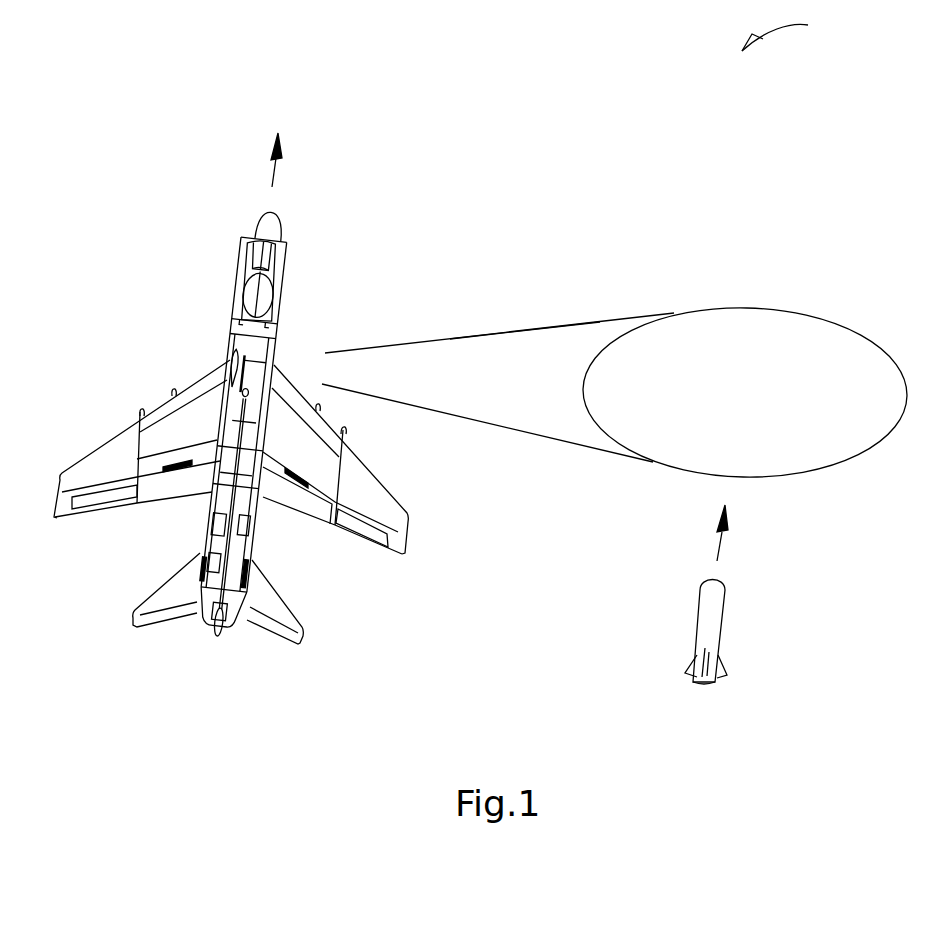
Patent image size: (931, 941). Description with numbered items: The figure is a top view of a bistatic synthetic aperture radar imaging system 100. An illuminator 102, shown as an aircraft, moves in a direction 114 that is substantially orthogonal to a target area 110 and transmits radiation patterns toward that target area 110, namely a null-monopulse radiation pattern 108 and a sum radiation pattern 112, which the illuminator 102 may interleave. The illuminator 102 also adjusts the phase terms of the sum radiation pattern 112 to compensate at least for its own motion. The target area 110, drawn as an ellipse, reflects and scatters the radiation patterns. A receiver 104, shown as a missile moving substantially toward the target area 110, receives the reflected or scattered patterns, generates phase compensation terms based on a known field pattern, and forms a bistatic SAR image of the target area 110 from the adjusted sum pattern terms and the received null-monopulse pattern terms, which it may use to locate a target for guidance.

The system 100 is at (797, 37).
The illuminator 102 is at (240, 263).
The receiver 104 is at (726, 617).
The null-monopulse radiation pattern 108 is at (405, 345).
The target area 110 is at (853, 350).
The sum radiation pattern 112 is at (501, 345).
The direction 114 is at (279, 170).